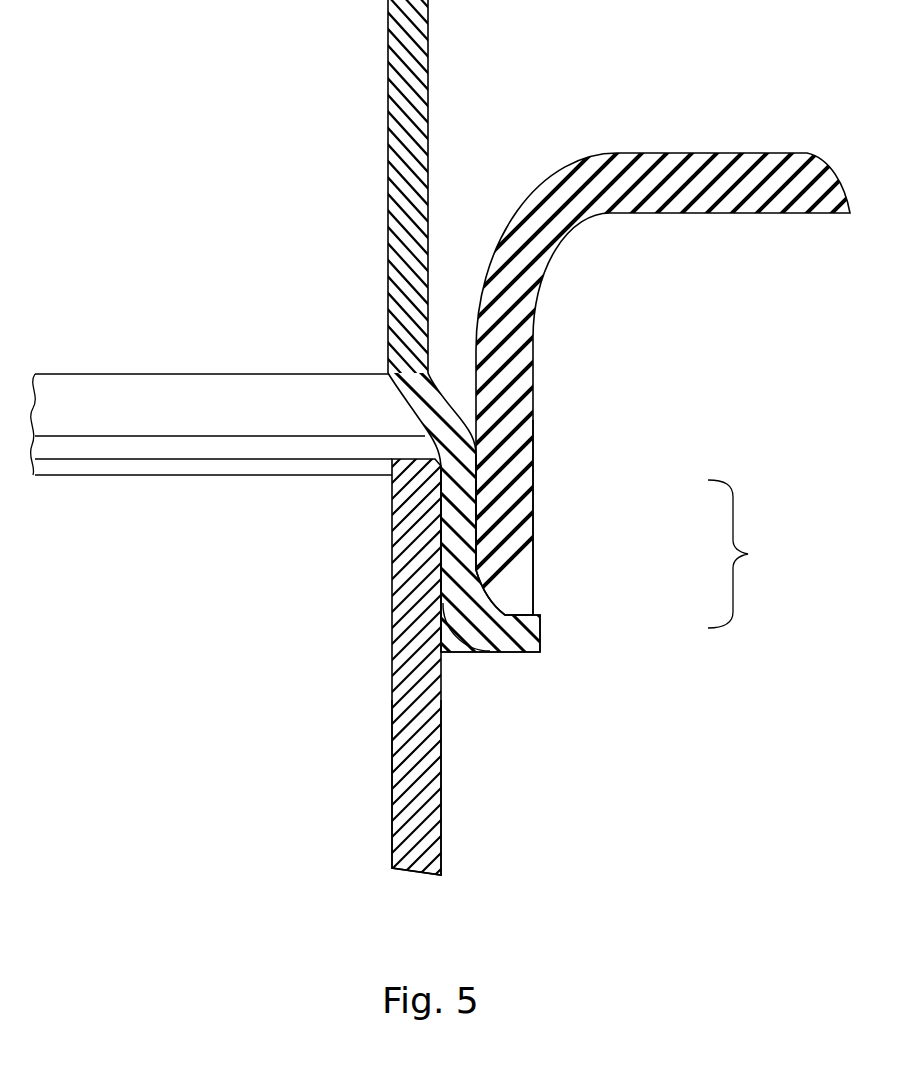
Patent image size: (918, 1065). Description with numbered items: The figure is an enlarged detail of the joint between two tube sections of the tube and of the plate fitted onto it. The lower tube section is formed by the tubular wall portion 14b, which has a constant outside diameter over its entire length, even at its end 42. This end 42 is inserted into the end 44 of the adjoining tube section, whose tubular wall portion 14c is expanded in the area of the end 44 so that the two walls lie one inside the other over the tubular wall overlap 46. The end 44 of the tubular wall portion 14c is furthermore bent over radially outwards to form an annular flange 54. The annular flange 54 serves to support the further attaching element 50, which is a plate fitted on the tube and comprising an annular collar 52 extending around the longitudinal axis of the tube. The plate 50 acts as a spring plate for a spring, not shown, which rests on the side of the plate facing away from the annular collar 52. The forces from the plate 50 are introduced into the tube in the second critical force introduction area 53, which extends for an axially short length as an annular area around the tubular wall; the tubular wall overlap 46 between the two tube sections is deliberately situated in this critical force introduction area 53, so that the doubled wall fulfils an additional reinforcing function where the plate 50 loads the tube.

The tubular wall portion 14b is at (430, 776).
The tubular wall portion 14c is at (422, 53).
The end of the tube section 42 is at (402, 548).
The end of the tube section 44 is at (475, 540).
The tubular wall overlap 46 is at (750, 555).
The further attaching element 50 is at (743, 247).
The annular collar 52 is at (522, 503).
The second critical force introduction area 53 is at (422, 573).
The annular flange 54 is at (520, 653).